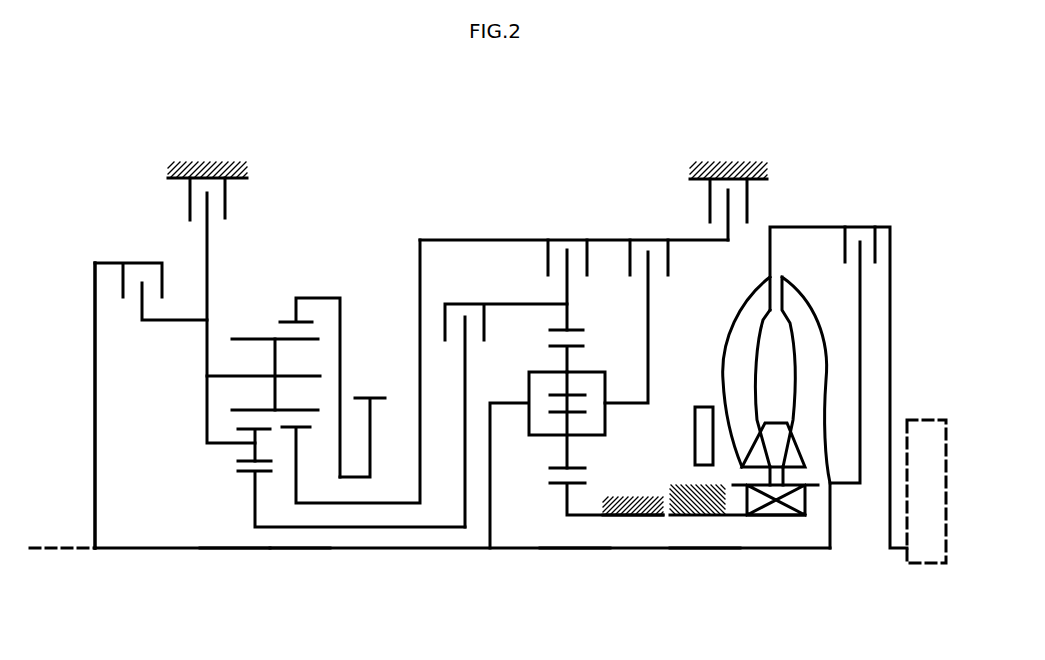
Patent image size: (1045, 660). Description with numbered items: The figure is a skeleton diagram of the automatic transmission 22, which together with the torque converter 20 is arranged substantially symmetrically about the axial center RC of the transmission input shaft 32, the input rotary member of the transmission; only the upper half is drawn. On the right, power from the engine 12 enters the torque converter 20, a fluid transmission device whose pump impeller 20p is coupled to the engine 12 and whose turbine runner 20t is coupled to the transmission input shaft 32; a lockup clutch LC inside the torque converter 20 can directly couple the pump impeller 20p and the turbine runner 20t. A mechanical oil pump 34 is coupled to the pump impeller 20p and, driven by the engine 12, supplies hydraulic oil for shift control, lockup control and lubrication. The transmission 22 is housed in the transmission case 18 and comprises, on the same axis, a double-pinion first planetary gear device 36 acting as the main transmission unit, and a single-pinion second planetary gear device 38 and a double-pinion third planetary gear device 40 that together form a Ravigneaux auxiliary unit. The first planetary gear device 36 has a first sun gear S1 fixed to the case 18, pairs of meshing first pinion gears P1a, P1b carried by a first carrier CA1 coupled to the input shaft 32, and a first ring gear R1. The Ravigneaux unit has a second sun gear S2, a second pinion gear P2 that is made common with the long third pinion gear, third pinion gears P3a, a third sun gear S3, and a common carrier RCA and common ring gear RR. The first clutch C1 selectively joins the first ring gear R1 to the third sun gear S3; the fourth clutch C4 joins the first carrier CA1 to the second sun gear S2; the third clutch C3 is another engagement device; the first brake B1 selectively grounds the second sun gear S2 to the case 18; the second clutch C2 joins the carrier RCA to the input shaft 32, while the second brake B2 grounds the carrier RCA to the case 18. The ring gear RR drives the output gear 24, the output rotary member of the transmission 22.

The automatic transmission 22 is at (174, 136).
The transmission case 18 is at (197, 166).
The second brake B2 is at (223, 199).
The second clutch C2 is at (151, 279).
The second pinion gear P2 is at (260, 325).
The ring gear RR is at (291, 320).
The output gear 24 is at (378, 397).
The carrier RCA is at (206, 387).
The third pinion gear P3a is at (242, 421).
The third sun gear S3 is at (237, 465).
The second sun gear S2 is at (303, 421).
The first clutch C1 is at (506, 403).
The third clutch C3 is at (567, 245).
The fourth clutch C4 is at (636, 309).
The first carrier CA1 is at (512, 400).
The first ring gear R1 is at (577, 334).
The first pinion gear P1a is at (579, 346).
The first pinion gear P1b is at (588, 468).
The first sun gear S1 is at (558, 478).
The first brake B1 is at (712, 209).
The torque converter 20 is at (845, 204).
The lockup clutch LC is at (834, 244).
The pump impeller 20p is at (745, 312).
The turbine runner 20t is at (805, 325).
The mechanical oil pump 34 is at (701, 406).
The engine 12 is at (925, 419).
The axial center RC is at (62, 552).
The third planetary gear device 40 is at (247, 566).
The second planetary gear device 38 is at (298, 566).
The first planetary gear device 36 is at (572, 566).
The transmission input shaft 32 is at (703, 550).